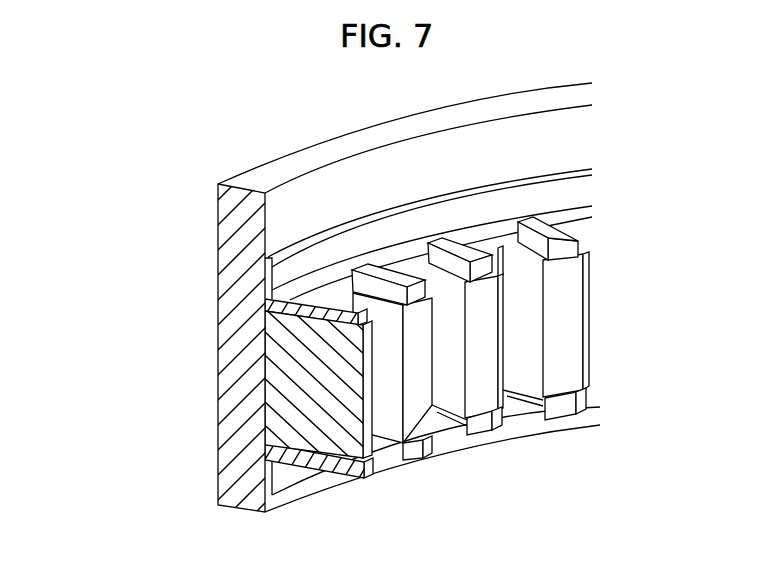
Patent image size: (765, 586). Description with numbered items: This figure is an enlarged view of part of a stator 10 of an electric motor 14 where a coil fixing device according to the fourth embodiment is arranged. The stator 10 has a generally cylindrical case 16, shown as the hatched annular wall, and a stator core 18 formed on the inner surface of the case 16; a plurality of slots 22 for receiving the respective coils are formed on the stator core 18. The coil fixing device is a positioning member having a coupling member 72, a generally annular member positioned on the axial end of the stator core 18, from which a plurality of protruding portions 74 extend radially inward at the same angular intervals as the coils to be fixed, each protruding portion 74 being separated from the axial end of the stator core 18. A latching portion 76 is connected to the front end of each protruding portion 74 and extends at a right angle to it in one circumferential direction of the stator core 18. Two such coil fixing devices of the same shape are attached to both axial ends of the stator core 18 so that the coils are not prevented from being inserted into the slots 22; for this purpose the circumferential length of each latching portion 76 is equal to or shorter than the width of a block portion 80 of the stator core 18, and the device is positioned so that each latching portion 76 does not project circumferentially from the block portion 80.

The stator 10 is at (198, 213).
The electric motor 14 is at (197, 157).
The case 16 is at (290, 165).
The stator core 18 is at (293, 373).
The slots 22 is at (459, 454).
The coupling member 72 is at (303, 296).
The protruding portions 74 is at (542, 236).
The latching portion 76 is at (568, 253).
The block portion 80 is at (568, 302).